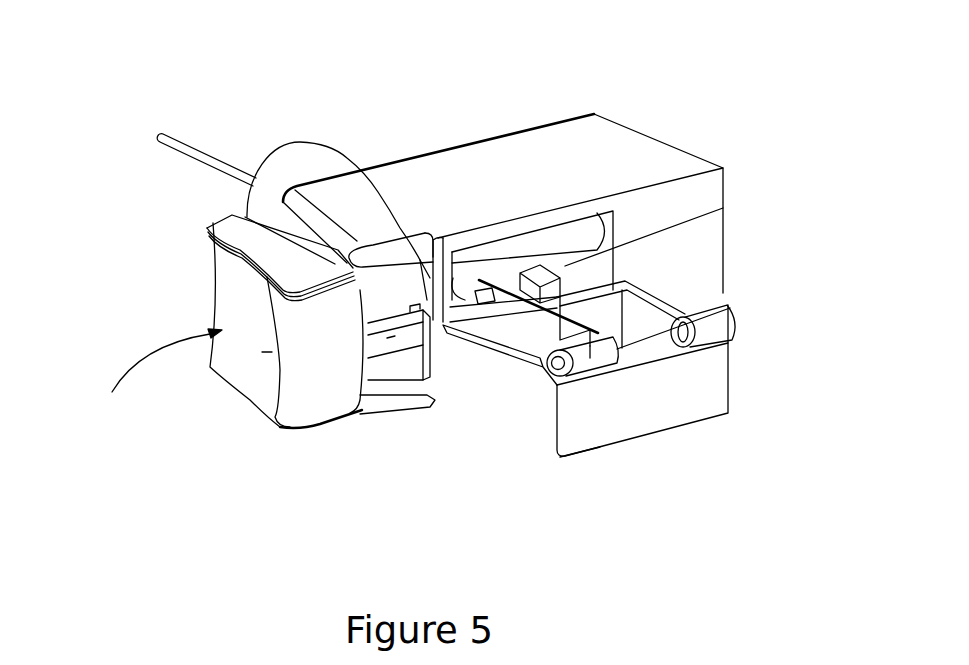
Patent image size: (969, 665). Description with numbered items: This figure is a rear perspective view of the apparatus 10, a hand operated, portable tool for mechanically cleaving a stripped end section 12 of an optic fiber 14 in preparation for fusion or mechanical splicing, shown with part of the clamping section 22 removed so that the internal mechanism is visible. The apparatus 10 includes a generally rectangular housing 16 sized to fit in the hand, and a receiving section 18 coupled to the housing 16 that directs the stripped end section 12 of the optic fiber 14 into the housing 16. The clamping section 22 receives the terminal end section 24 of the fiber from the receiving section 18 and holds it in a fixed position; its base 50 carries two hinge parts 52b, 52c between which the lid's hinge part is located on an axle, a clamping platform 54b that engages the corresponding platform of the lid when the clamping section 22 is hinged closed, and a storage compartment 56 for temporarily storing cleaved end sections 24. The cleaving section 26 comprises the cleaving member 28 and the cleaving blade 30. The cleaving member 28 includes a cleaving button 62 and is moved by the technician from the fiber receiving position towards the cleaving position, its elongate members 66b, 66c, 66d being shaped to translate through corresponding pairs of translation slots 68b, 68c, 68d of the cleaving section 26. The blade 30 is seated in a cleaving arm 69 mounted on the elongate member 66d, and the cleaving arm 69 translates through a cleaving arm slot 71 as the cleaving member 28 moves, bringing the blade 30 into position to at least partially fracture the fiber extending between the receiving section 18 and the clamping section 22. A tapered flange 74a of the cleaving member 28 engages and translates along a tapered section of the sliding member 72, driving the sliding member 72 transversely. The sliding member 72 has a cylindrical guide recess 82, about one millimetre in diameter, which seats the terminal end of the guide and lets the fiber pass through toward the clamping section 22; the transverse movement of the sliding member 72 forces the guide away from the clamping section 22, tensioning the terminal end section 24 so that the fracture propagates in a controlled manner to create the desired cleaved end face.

The apparatus 10 is at (516, 168).
The stripped end section of optic fiber 12 is at (524, 263).
The optic fiber 14 is at (196, 152).
The housing 16 is at (555, 140).
The receiving section 18 is at (297, 157).
The clamping section 22 is at (627, 413).
The terminal end section 24 is at (615, 289).
The cleaving section 26 is at (157, 376).
The cleaving member 28 is at (315, 282).
The cleaving blade 30 is at (500, 305).
The base 50 is at (663, 395).
The hinge part 52b is at (713, 328).
The hinge part 52c is at (590, 358).
The clamping platform 54b is at (529, 300).
The storage compartment 56 is at (658, 318).
The cleaving button 62 is at (223, 287).
The elongate member 66b is at (222, 239).
The elongate member 66c is at (368, 325).
The elongate member 66d is at (373, 377).
The translation slot 68b is at (310, 228).
The translation slot 68c is at (428, 256).
The translation slot 68d is at (426, 380).
The cleaving arm 69 is at (387, 338).
The cleaving arm slot 71 is at (459, 300).
The sliding member 72 is at (550, 273).
The tapered flange 74a is at (262, 352).
The cylindrical guide recess 82 is at (434, 236).